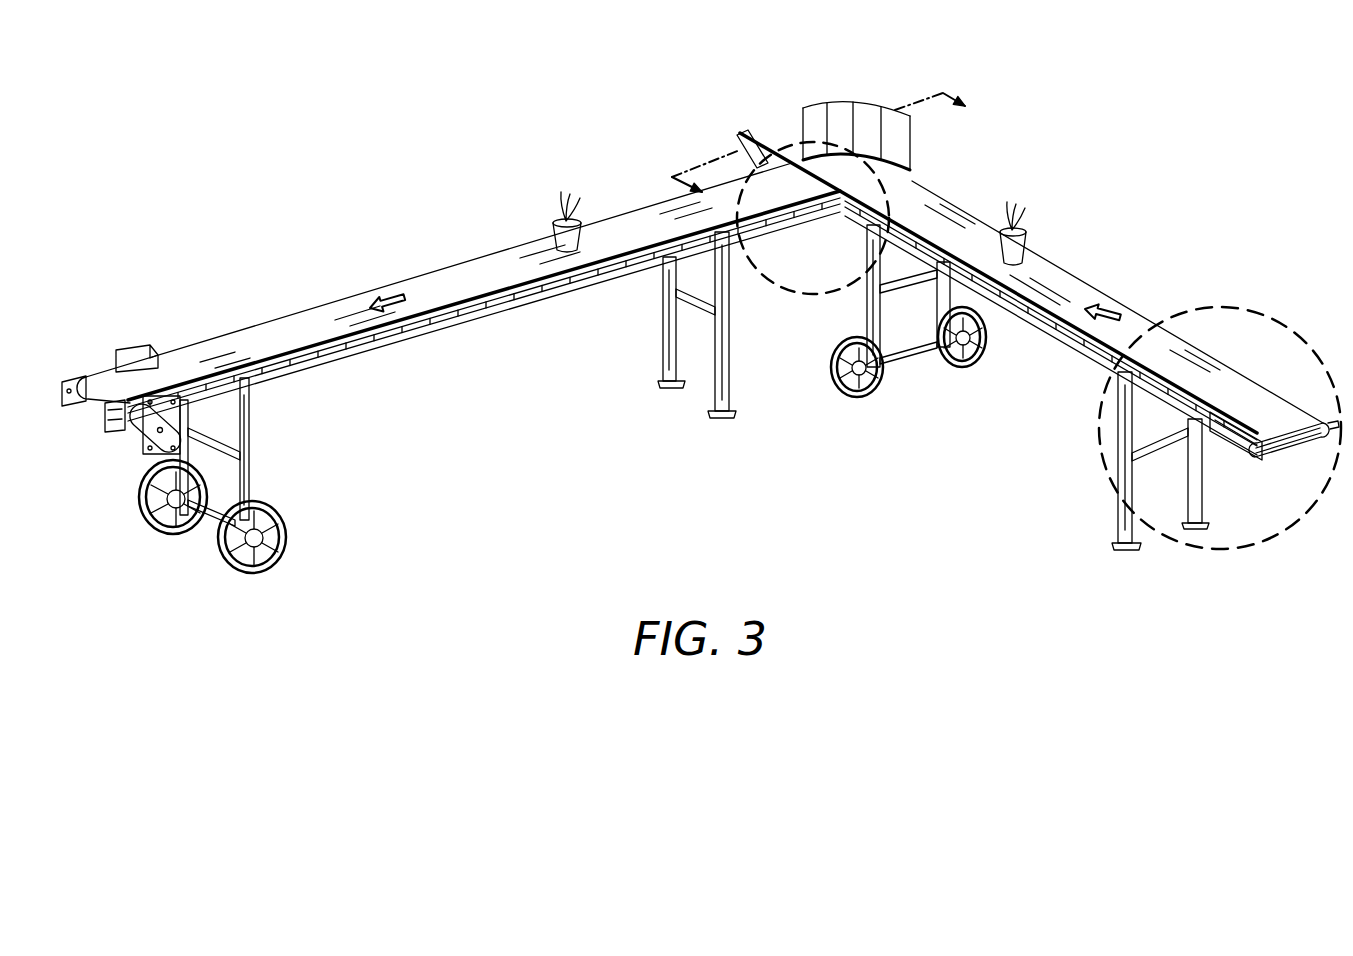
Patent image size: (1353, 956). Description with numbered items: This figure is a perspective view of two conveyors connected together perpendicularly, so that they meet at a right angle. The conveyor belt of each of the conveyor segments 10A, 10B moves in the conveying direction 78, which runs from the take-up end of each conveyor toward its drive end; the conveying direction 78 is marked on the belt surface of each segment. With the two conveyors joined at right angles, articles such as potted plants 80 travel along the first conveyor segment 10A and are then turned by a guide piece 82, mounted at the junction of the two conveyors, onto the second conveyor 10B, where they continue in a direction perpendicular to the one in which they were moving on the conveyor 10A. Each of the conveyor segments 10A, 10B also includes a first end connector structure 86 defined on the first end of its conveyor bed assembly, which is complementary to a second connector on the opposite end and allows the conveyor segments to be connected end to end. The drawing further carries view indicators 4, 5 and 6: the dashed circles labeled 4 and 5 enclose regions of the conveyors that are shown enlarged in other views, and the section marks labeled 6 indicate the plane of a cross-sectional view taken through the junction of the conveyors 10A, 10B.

The first conveyor segment 10A is at (967, 173).
The second conveyor segment 10B is at (450, 232).
The conveying direction 78 is at (380, 300).
The potted plants 80 is at (552, 227).
The guide piece 82 is at (853, 120).
The first end connector structure 86 is at (68, 383).
The detail view circle FIG. 4 is at (1237, 308).
The detail view circle FIG. 5 is at (806, 294).
The section line 6- 6 is at (817, 131).